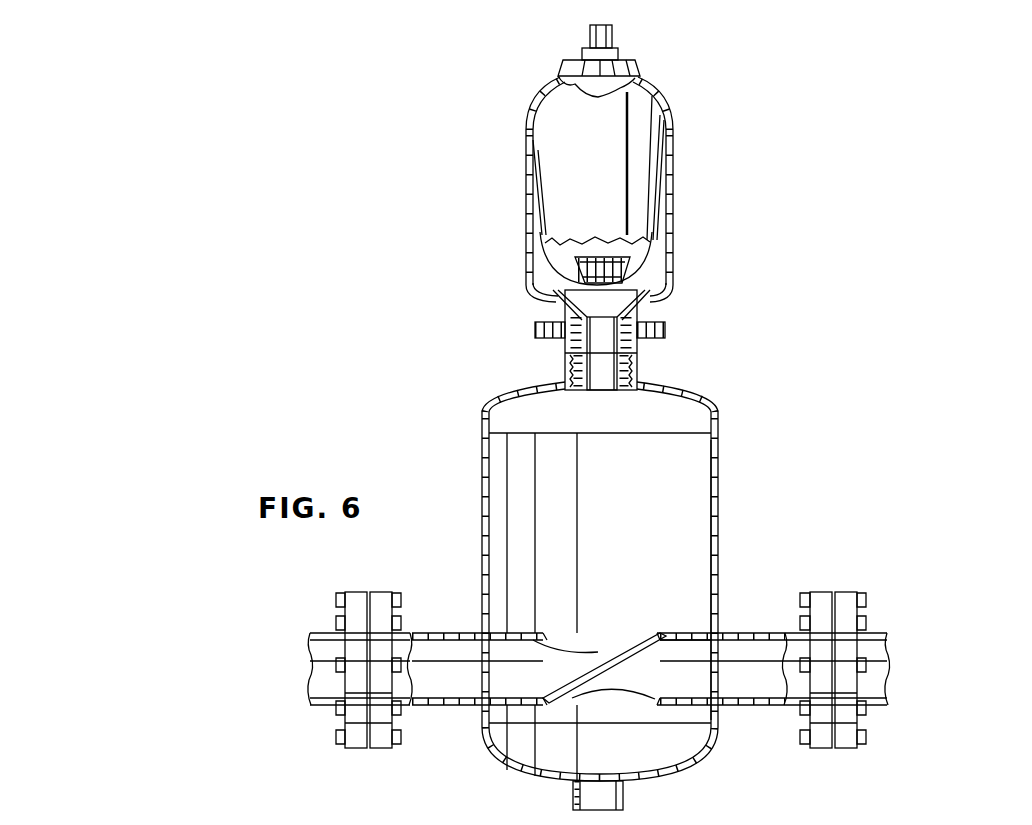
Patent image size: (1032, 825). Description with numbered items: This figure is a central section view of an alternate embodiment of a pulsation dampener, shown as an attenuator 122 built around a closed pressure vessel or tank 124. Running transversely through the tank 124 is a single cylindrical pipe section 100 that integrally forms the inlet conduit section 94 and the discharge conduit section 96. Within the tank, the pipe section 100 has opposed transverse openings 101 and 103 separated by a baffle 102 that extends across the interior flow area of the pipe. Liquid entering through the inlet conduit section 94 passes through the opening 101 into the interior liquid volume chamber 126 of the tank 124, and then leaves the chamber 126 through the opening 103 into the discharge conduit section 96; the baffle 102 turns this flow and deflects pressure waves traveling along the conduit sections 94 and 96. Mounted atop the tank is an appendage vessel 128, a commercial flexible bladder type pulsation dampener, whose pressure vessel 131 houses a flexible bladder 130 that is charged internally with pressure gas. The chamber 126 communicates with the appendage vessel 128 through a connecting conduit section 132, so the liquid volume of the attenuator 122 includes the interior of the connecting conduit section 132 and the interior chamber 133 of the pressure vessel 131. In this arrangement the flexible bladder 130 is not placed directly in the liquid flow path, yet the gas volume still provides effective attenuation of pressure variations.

The inlet conduit section 94 is at (456, 705).
The discharge conduit section 96 is at (744, 705).
The pipe section 100 is at (660, 633).
The transverse opening 101 is at (537, 634).
The baffle 102 is at (591, 679).
The transverse opening 103 is at (648, 698).
The attenuator 122 is at (724, 503).
The closed pressure vessel or tank 124 is at (718, 527).
The interior liquid volume chamber 126 is at (637, 541).
The appendage vessel 128 is at (682, 189).
The bladder 130 is at (663, 232).
The pressure vessel 131 is at (528, 133).
The connecting conduit section 132 is at (572, 340).
The interior chamber 133 is at (540, 268).